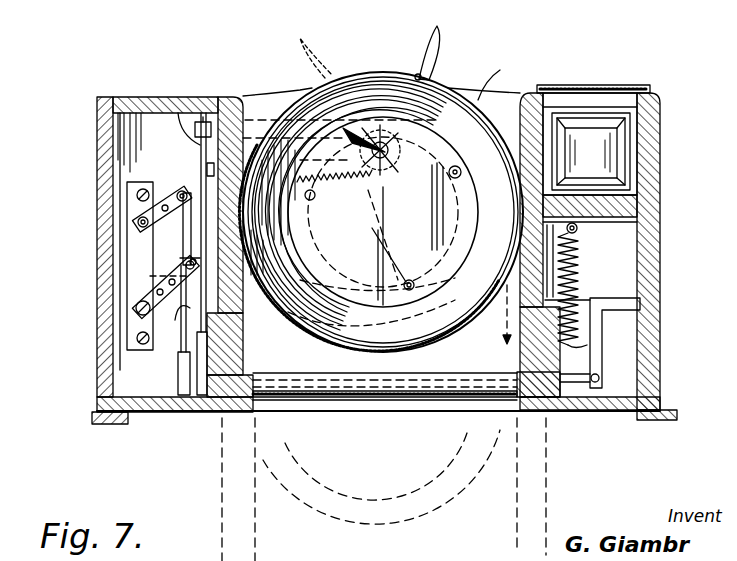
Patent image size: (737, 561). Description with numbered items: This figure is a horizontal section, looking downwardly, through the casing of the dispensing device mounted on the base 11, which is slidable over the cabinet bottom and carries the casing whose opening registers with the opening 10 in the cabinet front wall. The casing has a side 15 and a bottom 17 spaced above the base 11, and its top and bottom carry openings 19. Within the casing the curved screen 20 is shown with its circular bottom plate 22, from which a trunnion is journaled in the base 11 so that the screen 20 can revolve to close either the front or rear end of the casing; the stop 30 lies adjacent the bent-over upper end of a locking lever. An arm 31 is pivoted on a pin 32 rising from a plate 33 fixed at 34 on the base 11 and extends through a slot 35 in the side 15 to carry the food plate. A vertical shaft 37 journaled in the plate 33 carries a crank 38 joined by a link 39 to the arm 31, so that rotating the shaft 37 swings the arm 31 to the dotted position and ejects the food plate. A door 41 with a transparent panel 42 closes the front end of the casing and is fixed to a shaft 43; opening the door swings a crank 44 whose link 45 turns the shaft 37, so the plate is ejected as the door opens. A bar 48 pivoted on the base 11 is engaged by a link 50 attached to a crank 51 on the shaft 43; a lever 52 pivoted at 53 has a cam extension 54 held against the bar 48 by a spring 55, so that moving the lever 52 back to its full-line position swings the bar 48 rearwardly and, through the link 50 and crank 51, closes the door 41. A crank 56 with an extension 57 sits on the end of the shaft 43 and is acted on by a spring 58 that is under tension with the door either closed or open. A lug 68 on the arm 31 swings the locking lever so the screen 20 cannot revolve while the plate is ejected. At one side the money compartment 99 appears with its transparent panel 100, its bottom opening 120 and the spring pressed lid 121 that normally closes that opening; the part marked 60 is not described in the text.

The opening 10 is at (516, 97).
The base 11 is at (139, 411).
The side 15 is at (224, 108).
The bottom 17 is at (496, 314).
The openings 19 is at (553, 268).
The curved screen 20 is at (388, 72).
The circular bottom plate 22 is at (575, 237).
The stop 30 is at (498, 70).
The arm 31 is at (200, 184).
The pin 32 is at (136, 307).
The plate 33 is at (138, 258).
The fixing point 34 is at (139, 192).
The slot 35 is at (141, 398).
The vertical shaft 37 is at (138, 222).
The crank 38 is at (160, 184).
The link 39 is at (180, 192).
The door 41 is at (533, 410).
The transparent panel 42 is at (400, 411).
The shaft 43 is at (572, 388).
The crank 44 is at (157, 413).
The link 45 is at (178, 370).
The bar 48 is at (253, 137).
The link 50 is at (181, 113).
The crank 51 is at (200, 358).
The lever 52 is at (445, 27).
The pivot 53 is at (389, 154).
The cam extension 54 is at (366, 235).
The spring 55 is at (334, 205).
The crank 56 is at (599, 362).
The extension 57 is at (627, 302).
The spring 58 is at (583, 296).
The pin 60 is at (194, 266).
The lug 68 is at (180, 268).
The compartment 99 is at (593, 123).
The transparent panel 100 is at (576, 87).
The opening 120 is at (618, 151).
The spring pressed lid 121 is at (590, 152).